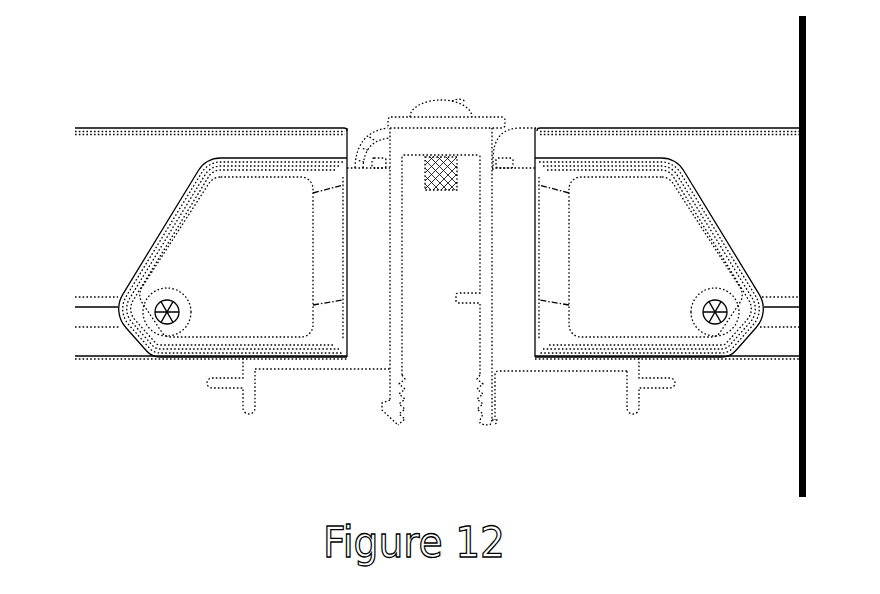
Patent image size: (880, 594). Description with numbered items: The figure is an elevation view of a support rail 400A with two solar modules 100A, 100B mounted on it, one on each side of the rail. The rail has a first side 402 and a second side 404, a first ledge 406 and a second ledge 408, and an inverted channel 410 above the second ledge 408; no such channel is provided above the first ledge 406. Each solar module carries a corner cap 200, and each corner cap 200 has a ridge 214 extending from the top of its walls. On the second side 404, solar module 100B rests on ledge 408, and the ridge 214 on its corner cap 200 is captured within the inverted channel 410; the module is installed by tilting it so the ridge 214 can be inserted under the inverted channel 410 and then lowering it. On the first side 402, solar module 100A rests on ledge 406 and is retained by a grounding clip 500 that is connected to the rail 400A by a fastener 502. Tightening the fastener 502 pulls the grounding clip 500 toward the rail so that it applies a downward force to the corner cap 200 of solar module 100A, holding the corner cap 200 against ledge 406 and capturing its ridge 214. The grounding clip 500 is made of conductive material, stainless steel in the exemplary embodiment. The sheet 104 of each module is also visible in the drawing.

The solar module 100A is at (232, 128).
The solar module 100B is at (670, 128).
The panel sheet / plate 104 is at (123, 140).
The corner cap 200 is at (197, 330).
The ridge 214 is at (378, 122).
The rail 400A is at (495, 421).
The first side of rail 402 is at (290, 393).
The second side of rail 404 is at (537, 392).
The first ledge 406 is at (330, 365).
The second ledge 408 is at (580, 365).
The inverted channel 410 is at (503, 138).
The grounding clip 500 is at (480, 120).
The fastener 502 is at (462, 102).